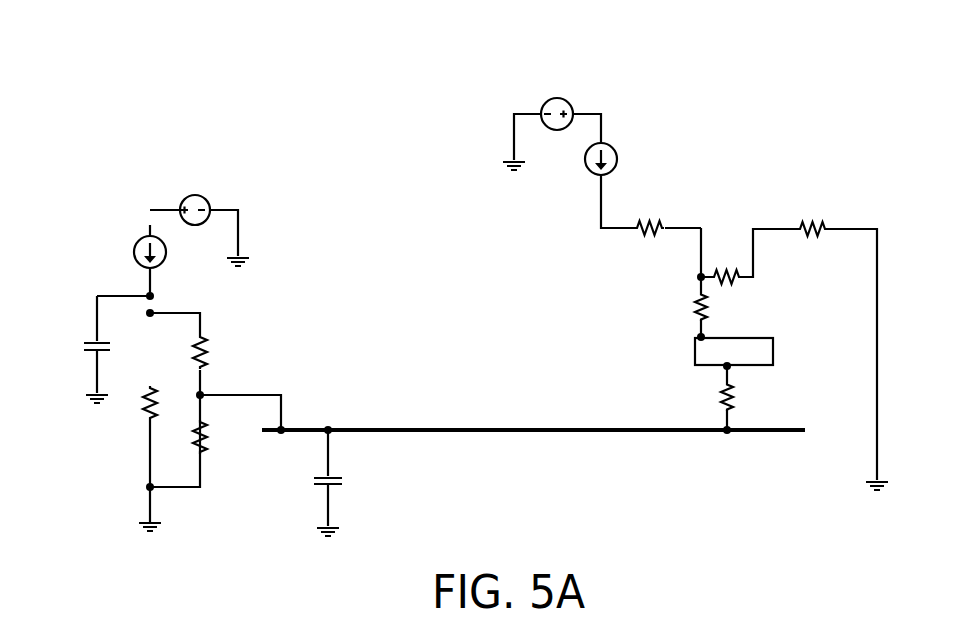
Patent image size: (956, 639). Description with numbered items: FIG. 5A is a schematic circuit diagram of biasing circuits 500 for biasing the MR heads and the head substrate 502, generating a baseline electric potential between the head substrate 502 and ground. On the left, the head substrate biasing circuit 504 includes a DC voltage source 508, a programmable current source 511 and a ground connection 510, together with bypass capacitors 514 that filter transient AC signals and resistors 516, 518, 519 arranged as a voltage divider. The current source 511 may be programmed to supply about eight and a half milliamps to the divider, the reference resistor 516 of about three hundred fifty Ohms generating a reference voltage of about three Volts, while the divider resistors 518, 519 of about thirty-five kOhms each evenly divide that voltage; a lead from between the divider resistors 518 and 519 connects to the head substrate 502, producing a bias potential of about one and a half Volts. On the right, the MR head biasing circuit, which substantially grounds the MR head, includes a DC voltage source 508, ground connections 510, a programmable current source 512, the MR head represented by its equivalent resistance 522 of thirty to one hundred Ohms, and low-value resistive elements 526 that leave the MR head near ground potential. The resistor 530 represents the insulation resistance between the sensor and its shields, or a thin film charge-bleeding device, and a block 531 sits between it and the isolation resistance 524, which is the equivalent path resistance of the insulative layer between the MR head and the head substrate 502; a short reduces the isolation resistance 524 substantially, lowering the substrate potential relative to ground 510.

The biasing circuits 500 is at (130, 78).
The head substrate 502 is at (527, 428).
The head substrate biasing circuit 504 is at (281, 183).
The DC voltage source 508 is at (189, 196).
The ground connection 510 is at (250, 258).
The programmable current source 511 is at (145, 238).
The programmable current source 512 is at (618, 152).
The bypass capacitor 514 is at (88, 342).
The reference resistor 516 is at (148, 410).
The divider resistor 518 is at (208, 340).
The divider resistor 519 is at (208, 448).
The equivalent resistance 522 is at (738, 268).
The isolation resistance 524 is at (737, 402).
The resistive element 526 is at (643, 234).
The resistor 530 is at (695, 303).
The sensing element 531 is at (695, 346).